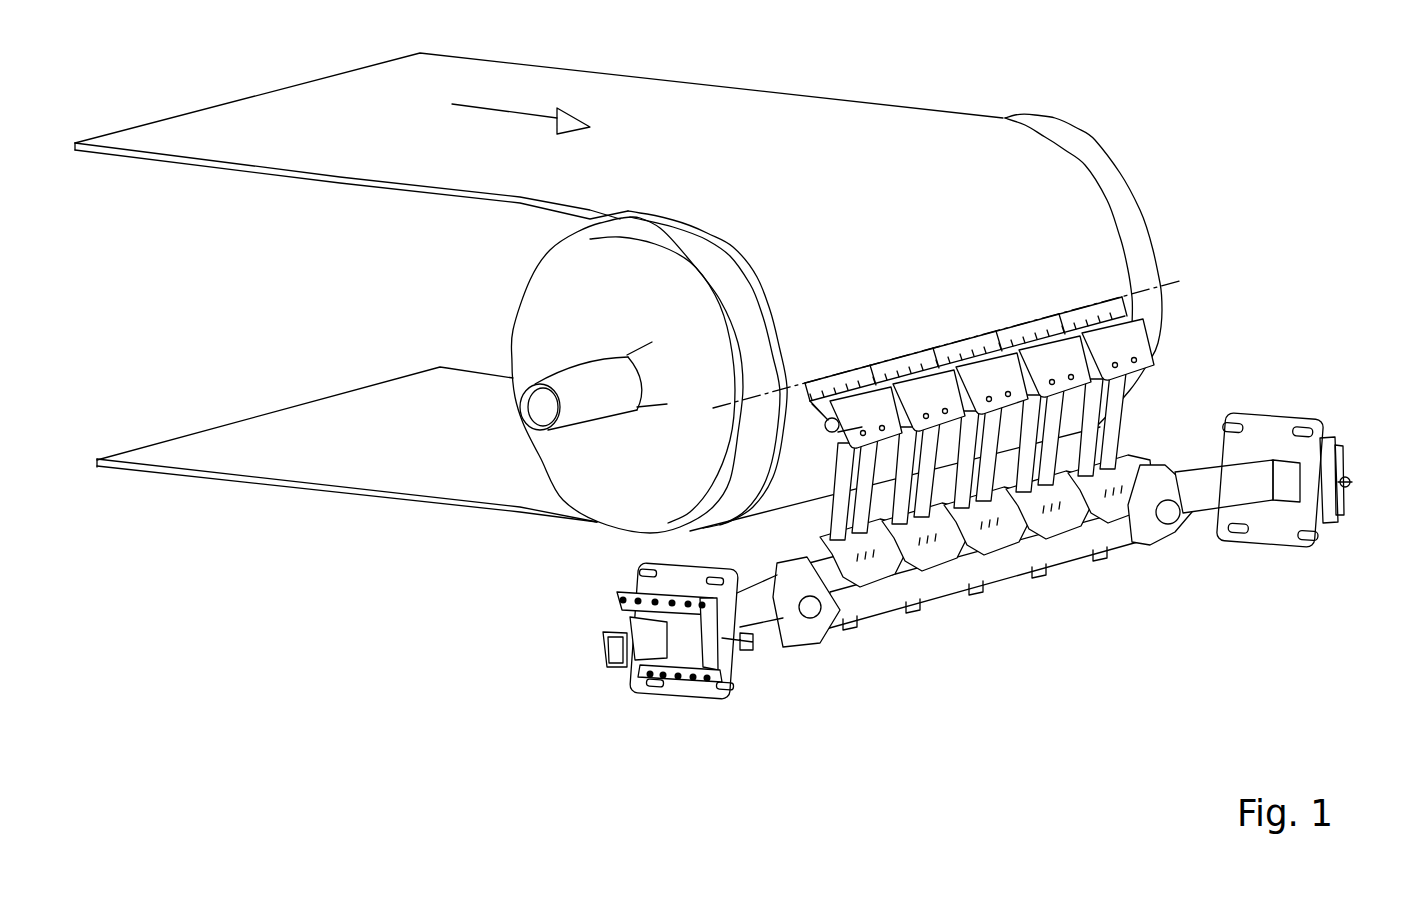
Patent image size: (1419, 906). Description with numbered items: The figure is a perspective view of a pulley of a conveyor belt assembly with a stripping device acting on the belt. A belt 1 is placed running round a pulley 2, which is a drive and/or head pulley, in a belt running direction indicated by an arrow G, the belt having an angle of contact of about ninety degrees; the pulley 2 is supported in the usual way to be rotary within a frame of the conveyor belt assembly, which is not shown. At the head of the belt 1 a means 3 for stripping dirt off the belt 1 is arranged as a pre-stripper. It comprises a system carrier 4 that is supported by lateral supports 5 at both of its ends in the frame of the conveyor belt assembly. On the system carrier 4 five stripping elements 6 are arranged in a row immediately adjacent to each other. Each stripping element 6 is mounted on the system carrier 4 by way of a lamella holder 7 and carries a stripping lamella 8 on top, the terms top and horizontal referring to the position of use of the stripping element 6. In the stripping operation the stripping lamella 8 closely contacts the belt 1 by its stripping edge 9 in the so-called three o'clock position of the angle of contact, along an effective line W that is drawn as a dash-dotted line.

The belt 1 is at (787, 123).
The pulley 2 is at (1093, 150).
The means for stripping dirt 3 is at (828, 738).
The system carrier 4 is at (1230, 577).
The lateral supports 5 is at (1312, 418).
The stripping element 6 is at (1218, 363).
The lamella holder 7 is at (1058, 438).
The stripping lamella 8 is at (1180, 304).
The stripping edge 9 is at (1087, 300).
The effective line W is at (713, 408).
The belt running direction G is at (530, 113).